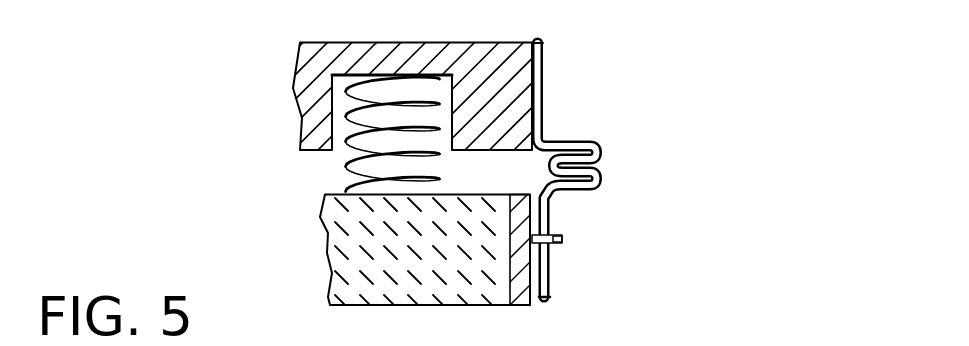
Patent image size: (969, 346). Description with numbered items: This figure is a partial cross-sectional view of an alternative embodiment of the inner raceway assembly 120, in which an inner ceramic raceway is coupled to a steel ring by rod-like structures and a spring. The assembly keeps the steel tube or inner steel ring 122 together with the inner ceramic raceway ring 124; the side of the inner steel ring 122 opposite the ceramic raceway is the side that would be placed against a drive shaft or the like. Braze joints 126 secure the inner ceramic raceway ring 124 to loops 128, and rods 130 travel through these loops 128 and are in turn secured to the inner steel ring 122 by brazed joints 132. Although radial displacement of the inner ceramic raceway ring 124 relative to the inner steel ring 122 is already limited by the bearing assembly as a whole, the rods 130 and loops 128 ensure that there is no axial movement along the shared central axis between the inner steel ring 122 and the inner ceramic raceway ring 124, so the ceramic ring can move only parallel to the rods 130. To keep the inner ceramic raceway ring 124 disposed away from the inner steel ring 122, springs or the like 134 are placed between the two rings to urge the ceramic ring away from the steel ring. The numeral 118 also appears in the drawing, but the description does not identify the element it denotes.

The base member 118 is at (348, 342).
The inner raceway assembly 120 is at (690, 98).
The inner steel ring 122 is at (368, 62).
The inner ceramic raceway ring 124 is at (335, 265).
The braze joints 126 is at (523, 303).
The loops 128 is at (557, 240).
The rods 130 is at (543, 92).
The brazed joints 132 is at (542, 60).
The springs 134 is at (347, 172).